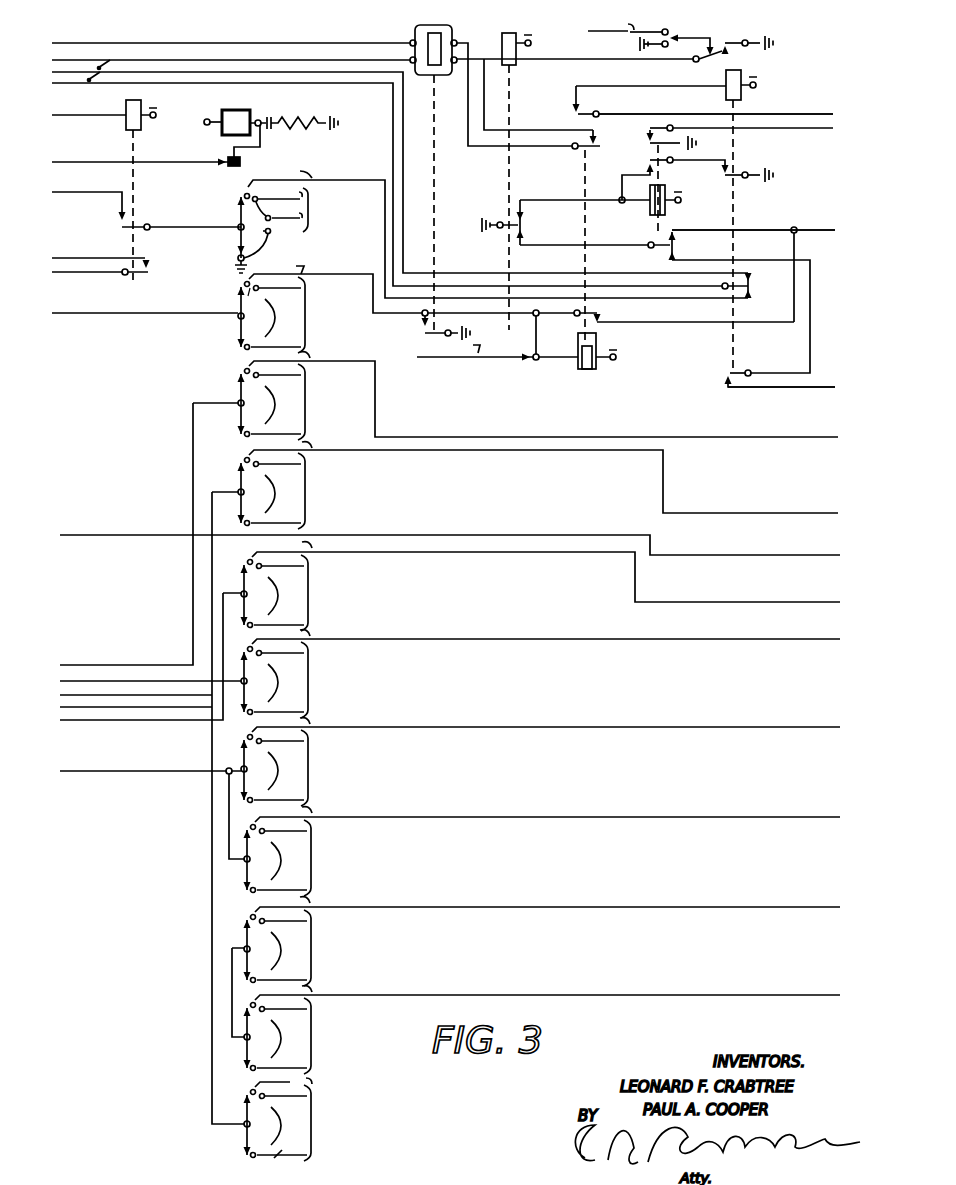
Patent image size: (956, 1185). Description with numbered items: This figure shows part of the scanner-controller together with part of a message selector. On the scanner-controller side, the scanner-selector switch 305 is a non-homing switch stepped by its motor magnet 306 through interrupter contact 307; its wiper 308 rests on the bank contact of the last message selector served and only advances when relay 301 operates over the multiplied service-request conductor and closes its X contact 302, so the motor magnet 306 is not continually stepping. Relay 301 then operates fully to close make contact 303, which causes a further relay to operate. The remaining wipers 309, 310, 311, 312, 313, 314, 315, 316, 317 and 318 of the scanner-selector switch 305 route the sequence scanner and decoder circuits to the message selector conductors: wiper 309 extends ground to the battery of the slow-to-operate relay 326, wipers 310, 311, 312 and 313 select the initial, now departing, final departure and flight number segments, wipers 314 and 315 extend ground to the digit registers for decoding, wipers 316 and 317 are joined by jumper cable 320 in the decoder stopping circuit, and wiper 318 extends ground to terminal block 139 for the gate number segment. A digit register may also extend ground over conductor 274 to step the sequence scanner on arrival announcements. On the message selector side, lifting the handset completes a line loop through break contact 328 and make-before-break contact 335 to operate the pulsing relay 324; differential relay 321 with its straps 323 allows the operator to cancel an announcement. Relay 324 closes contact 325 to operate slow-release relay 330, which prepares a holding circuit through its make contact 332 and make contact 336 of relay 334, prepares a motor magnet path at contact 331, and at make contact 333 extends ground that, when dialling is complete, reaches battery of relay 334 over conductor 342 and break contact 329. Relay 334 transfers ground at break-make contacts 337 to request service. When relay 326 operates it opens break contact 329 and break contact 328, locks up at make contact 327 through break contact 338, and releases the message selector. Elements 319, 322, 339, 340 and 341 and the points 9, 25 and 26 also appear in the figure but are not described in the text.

The relay 301 is at (122, 119).
The X contact 302 is at (120, 225).
The make contact 303 is at (152, 266).
The scanner-selector switch 305 is at (257, 108).
The motor magnet 306 is at (212, 114).
The interrupter contact 307 is at (228, 169).
The wiper 308 is at (470, 231).
The wiper 309 is at (237, 306).
The wiper 310 is at (238, 403).
The wiper 311 is at (239, 492).
The wiper 312 is at (244, 591).
The wiper 313 is at (240, 676).
The wiper 314 is at (244, 766).
The wiper 315 is at (247, 880).
The wiper 316 is at (247, 944).
The wiper 317 is at (251, 1060).
The wiper 318 is at (250, 1122).
The conductor 319 is at (228, 816).
The jumper cable 320 is at (232, 993).
The differential relay 321 is at (414, 54).
The contact 322 is at (420, 333).
The straps 323 is at (502, 56).
The pulsing relay 324 is at (528, 54).
The contact 325 is at (526, 224).
The slow-to-operate relay 326 is at (604, 354).
The make contact 327 is at (604, 320).
The break contact 328 is at (600, 147).
The break contact 329 is at (572, 114).
The slow-release relay 330 is at (668, 204).
The contact 331 is at (676, 242).
The make contact 332 is at (658, 170).
The make contact 333 is at (651, 138).
The relay 334 is at (726, 82).
The make-before-break contact 335 is at (738, 53).
The make contact 336 is at (730, 168).
The break-make contacts 337 is at (752, 284).
The break contact 338 is at (726, 379).
The conductor 339 is at (822, 387).
The conductor 340 is at (834, 226).
The conductor 341 is at (820, 128).
The conductor 342 is at (812, 113).
The conductor 274 is at (132, 534).
The switch terminal 9 is at (256, 231).
The switch terminal 25 is at (228, 330).
The switch terminal 26 is at (232, 262).
The terminal block 139 is at (355, 1128).